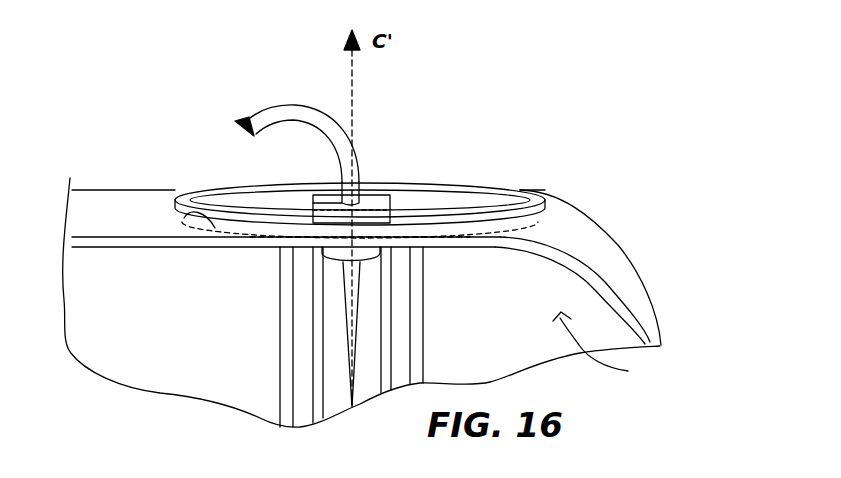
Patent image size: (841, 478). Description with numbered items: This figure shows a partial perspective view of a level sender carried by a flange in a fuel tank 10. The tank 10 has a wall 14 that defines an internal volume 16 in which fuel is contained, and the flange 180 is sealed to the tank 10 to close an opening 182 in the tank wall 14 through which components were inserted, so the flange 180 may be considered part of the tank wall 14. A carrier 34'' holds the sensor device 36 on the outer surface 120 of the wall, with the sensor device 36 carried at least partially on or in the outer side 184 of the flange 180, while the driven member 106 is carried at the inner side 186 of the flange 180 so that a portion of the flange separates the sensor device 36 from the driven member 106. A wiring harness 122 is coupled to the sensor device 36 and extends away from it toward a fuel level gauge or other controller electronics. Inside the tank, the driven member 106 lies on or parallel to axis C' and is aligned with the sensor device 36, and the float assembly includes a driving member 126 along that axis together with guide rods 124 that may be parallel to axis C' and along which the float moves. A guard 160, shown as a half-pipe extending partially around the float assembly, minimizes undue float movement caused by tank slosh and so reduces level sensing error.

The fuel tank 10 is at (641, 268).
The tank wall 14 is at (661, 331).
The internal volume 16 is at (603, 348).
The carrier 34'' is at (396, 186).
The sensor device 36 is at (331, 214).
The driven member 106 is at (375, 266).
The outer surface 120 is at (125, 210).
The wiring harness 122 is at (319, 118).
The guide rods 124 is at (390, 337).
The driving member 126 is at (343, 300).
The guard 160 is at (280, 371).
The flange 180 is at (521, 190).
The opening 182 is at (185, 217).
The outer side 184 is at (260, 210).
The inner side 186 is at (271, 232).